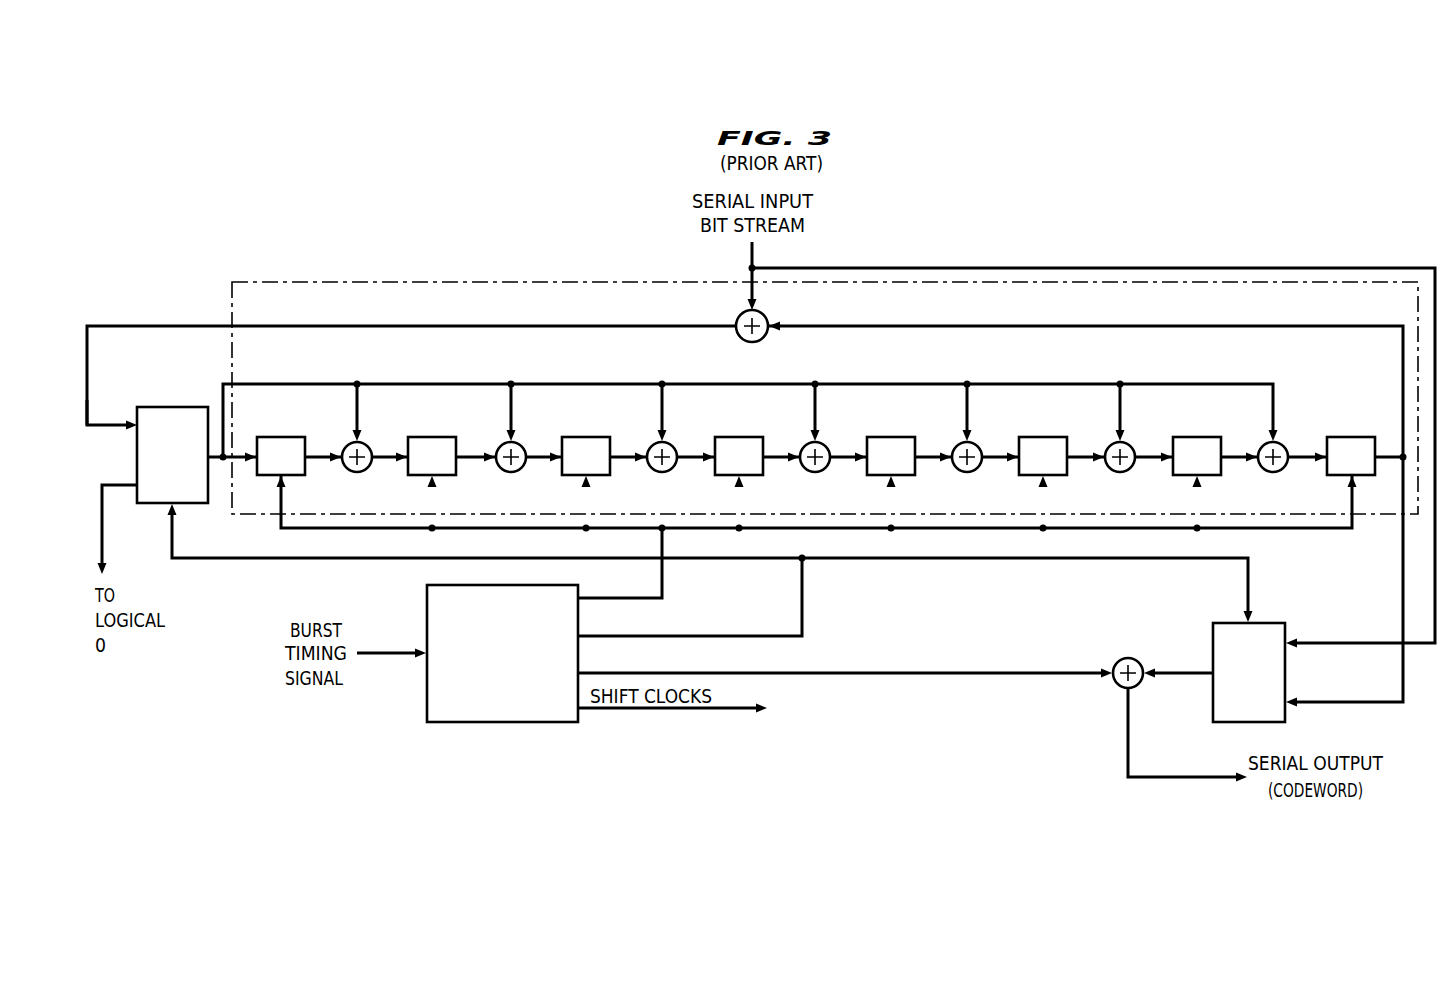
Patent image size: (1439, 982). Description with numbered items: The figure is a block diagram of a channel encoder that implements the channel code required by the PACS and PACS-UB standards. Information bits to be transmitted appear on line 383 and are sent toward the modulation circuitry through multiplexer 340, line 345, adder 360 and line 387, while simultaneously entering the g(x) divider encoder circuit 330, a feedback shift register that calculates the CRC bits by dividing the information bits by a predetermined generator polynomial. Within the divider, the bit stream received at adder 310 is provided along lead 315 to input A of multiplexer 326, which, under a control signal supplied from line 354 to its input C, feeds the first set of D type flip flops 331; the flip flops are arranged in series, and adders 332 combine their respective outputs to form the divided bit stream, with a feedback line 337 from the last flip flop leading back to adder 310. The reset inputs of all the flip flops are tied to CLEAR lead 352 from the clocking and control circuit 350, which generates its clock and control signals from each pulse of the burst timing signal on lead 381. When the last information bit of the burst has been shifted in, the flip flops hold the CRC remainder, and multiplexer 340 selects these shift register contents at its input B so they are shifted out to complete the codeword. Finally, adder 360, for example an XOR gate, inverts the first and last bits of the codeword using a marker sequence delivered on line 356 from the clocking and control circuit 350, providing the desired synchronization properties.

The adder 310 is at (744, 337).
The lead 315 is at (106, 424).
The multiplexer 326 is at (180, 407).
The g(x) divider encoder circuit 330 is at (268, 281).
The D type flip flops 331 is at (810, 470).
The adders 332 is at (812, 446).
The feedback line 337 is at (944, 326).
The multiplexer 340 is at (1270, 623).
The line 345 is at (1183, 670).
The clocking and control circuit 350 is at (455, 724).
The CLEAR lead 352 is at (665, 590).
The line 354 is at (804, 596).
The line 356 is at (843, 673).
The adder 360 is at (1123, 658).
The lead 381 is at (388, 652).
The line 383 is at (875, 267).
The line 387 is at (1157, 773).